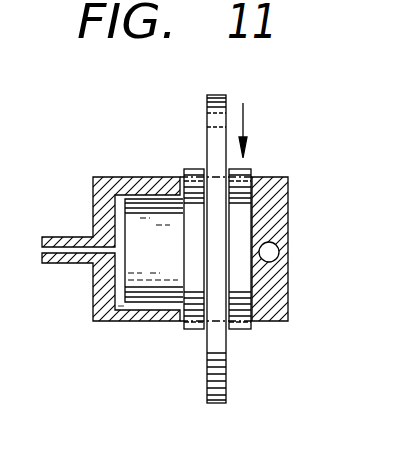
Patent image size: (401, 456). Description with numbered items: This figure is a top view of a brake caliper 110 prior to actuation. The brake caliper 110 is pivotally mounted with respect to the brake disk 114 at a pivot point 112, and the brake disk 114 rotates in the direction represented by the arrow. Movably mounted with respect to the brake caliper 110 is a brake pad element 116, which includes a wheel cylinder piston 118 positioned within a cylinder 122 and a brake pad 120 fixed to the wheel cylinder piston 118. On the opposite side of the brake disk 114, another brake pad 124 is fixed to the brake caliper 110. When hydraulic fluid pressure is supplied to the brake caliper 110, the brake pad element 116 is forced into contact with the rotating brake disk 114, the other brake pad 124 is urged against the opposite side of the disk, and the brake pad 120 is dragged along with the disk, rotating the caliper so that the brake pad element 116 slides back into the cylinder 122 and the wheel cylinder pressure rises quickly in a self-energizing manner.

The brake caliper 110 is at (124, 178).
The pivot point 112 is at (279, 252).
The brake disk 114 is at (227, 378).
The brake pad element 116 is at (163, 198).
The wheel cylinder piston 118 is at (128, 331).
The brake pad 120 is at (195, 330).
The cylinder 122 is at (122, 309).
The brake pad 124 is at (247, 168).